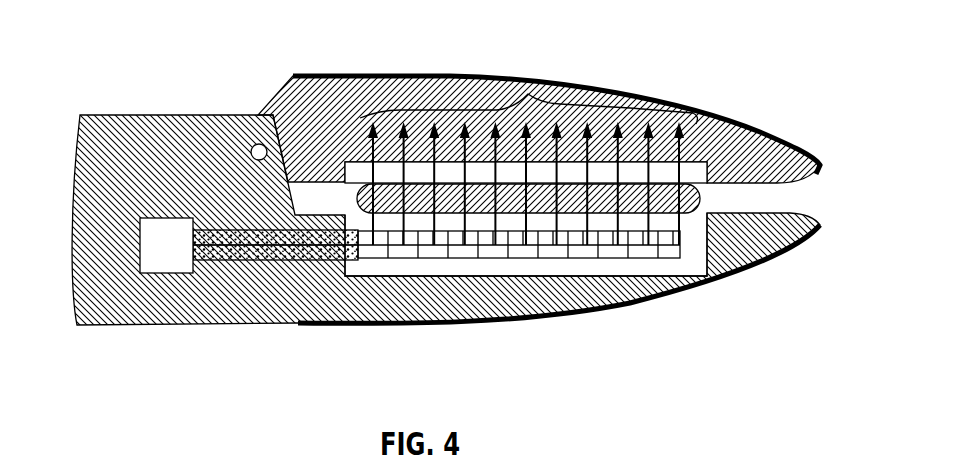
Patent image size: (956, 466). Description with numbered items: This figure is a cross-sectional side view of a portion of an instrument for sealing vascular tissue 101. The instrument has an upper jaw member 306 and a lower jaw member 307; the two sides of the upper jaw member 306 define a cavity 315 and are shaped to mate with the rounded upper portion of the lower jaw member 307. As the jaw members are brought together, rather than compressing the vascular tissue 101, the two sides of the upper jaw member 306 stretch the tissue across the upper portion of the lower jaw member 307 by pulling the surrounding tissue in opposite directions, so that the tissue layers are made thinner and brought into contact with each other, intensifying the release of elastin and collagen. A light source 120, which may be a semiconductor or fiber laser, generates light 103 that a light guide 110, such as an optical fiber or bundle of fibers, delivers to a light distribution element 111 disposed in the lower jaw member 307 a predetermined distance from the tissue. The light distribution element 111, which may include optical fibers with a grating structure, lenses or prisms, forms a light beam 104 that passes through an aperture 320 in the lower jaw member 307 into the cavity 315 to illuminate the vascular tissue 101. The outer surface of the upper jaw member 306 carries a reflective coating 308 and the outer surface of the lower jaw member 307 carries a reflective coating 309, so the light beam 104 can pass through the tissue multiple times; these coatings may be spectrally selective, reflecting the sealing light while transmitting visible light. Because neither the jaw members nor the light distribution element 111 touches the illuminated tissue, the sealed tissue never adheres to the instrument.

The vascular tissue 101 is at (539, 109).
The light 103 is at (218, 230).
The light beam 104 is at (528, 92).
The light guide 110 is at (267, 260).
The light distribution element 111 is at (472, 255).
The light source 120 is at (185, 259).
The upper jaw member 306 is at (352, 75).
The lower jaw member 307 is at (446, 241).
The reflective coating 308 is at (434, 80).
The reflective coating 309 is at (338, 327).
The cavity 315 is at (694, 162).
The aperture 320 is at (688, 222).